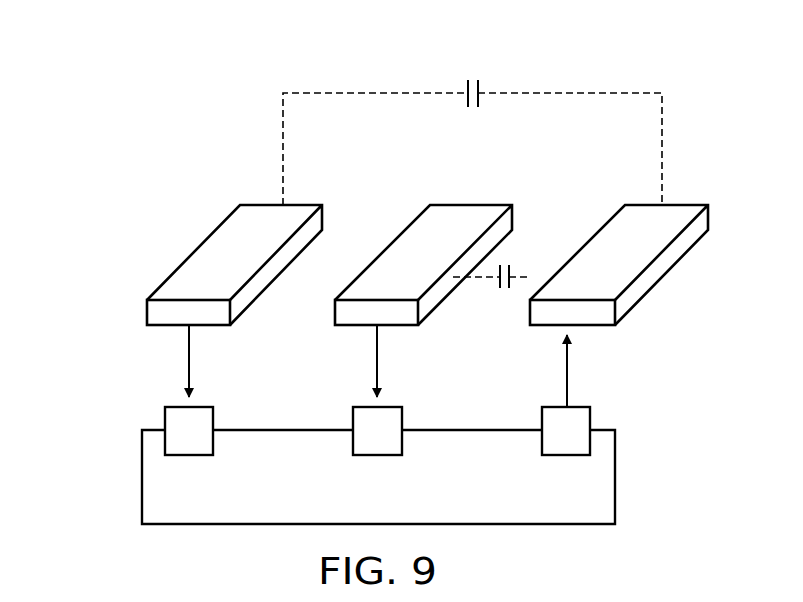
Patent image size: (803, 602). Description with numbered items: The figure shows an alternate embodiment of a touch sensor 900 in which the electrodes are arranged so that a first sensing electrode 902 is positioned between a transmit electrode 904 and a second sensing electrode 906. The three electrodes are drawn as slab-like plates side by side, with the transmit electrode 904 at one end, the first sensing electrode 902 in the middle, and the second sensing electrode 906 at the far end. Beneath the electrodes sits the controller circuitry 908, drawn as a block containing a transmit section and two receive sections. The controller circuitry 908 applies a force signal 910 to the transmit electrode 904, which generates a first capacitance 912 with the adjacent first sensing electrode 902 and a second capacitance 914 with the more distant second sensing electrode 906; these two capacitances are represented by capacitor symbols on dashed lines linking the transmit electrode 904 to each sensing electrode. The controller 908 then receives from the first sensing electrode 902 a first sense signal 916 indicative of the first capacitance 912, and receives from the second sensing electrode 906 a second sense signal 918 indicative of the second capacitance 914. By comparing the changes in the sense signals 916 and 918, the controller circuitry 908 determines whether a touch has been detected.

The touch sensor 900 is at (97, 193).
The first sensing electrode 902 is at (402, 245).
The transmit electrode 904 is at (596, 245).
The second sensing electrode 906 is at (212, 245).
The controller circuitry 908 is at (615, 475).
The force signal 910 is at (568, 363).
The first capacitance 912 is at (503, 292).
The second capacitance 914 is at (472, 78).
The first sense signal 916 is at (371, 371).
The second sense signal 918 is at (183, 371).